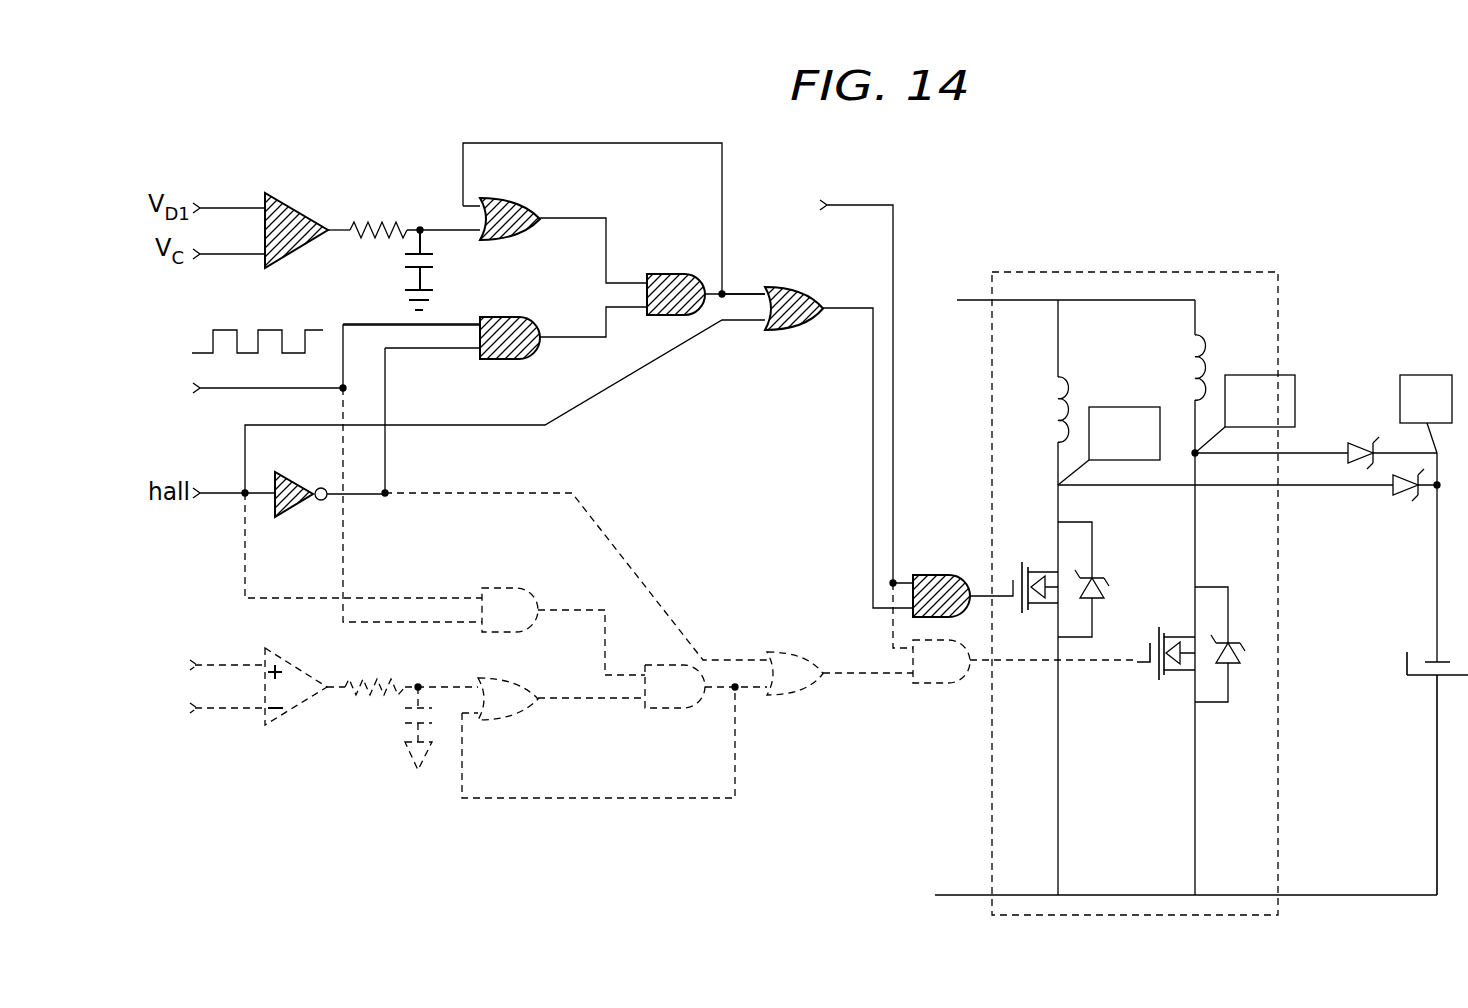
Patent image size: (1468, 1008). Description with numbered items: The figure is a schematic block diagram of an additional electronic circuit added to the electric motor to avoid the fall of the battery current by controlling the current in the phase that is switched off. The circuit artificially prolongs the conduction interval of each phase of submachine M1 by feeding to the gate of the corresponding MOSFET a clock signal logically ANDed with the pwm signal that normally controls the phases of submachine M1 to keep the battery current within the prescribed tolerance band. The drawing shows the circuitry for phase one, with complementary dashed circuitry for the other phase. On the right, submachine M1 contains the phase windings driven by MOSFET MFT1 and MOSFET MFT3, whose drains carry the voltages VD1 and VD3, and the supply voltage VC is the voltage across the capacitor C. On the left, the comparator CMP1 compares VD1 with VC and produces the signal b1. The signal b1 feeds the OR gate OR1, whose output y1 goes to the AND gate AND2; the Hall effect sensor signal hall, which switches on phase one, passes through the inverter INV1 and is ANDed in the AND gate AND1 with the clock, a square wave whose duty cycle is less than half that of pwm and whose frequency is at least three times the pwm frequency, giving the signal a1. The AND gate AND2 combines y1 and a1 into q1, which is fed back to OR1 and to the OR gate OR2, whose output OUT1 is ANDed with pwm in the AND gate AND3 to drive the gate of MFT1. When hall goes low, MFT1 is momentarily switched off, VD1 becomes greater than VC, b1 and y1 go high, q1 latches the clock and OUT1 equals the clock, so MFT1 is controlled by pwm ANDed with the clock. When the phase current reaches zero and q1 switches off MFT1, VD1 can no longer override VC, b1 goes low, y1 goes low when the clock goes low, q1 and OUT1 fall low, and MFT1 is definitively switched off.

The comparator CMP1 is at (261, 216).
The OR gate OR1 is at (592, 218).
The AND gate AND1 is at (441, 319).
The AND gate AND2 is at (705, 278).
The OR gate OR2 is at (534, 374).
The AND gate AND3 is at (961, 580).
The inverter INV1 is at (290, 432).
The submachine M1 is at (1186, 577).
The MOSFET MFT1 is at (1081, 565).
The MOSFET MFT3 is at (1202, 629).
The voltage at the drain of MFT1 VD1 is at (1109, 446).
The voltage at the drain of MFT3 VD3 is at (1243, 415).
The voltage across the capacitor VC is at (1426, 414).
The capacitor C is at (1425, 761).
The comparator output signal b1 is at (404, 253).
The OR1 output signal y1 is at (593, 232).
The AND1 output signal a1 is at (593, 314).
The latch signal q1 is at (743, 274).
The output signal OUT1 is at (868, 442).
The pwm signal pwm is at (836, 388).
The clock signal clock is at (301, 364).
The Hall effect sensor signal hall is at (392, 492).